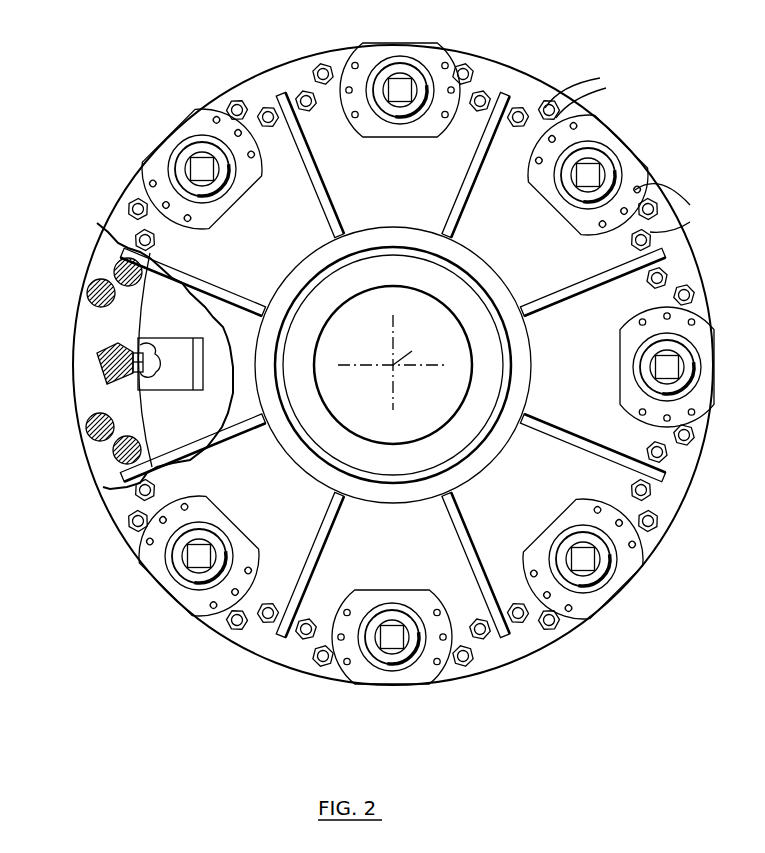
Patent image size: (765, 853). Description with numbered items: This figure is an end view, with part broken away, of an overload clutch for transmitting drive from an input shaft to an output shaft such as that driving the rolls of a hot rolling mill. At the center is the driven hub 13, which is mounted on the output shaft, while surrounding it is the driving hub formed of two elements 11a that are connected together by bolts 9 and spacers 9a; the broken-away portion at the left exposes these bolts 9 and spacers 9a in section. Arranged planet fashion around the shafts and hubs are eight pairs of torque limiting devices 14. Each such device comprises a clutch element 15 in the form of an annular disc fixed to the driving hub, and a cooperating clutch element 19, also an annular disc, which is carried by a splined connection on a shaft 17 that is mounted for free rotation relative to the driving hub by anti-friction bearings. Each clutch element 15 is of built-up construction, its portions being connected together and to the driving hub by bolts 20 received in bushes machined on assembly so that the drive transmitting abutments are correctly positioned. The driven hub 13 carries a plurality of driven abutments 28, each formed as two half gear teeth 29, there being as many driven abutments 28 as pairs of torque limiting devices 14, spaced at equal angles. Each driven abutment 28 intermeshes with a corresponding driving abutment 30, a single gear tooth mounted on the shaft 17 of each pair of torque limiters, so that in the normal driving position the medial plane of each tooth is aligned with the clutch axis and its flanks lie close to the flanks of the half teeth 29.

The bolts 9 is at (486, 98).
The spacers 9a is at (91, 283).
The elements of driving hub 11a is at (417, 194).
The driven hub 13 is at (483, 325).
The torque limiting devices 14 is at (427, 64).
The clutch element 15 is at (357, 128).
The shaft 17 is at (400, 80).
The clutch element 19 is at (430, 128).
The bolts 20 is at (576, 120).
The driven abutment 28 is at (185, 345).
The half gear teeth 29 is at (162, 360).
The driving abutment 30 is at (125, 380).